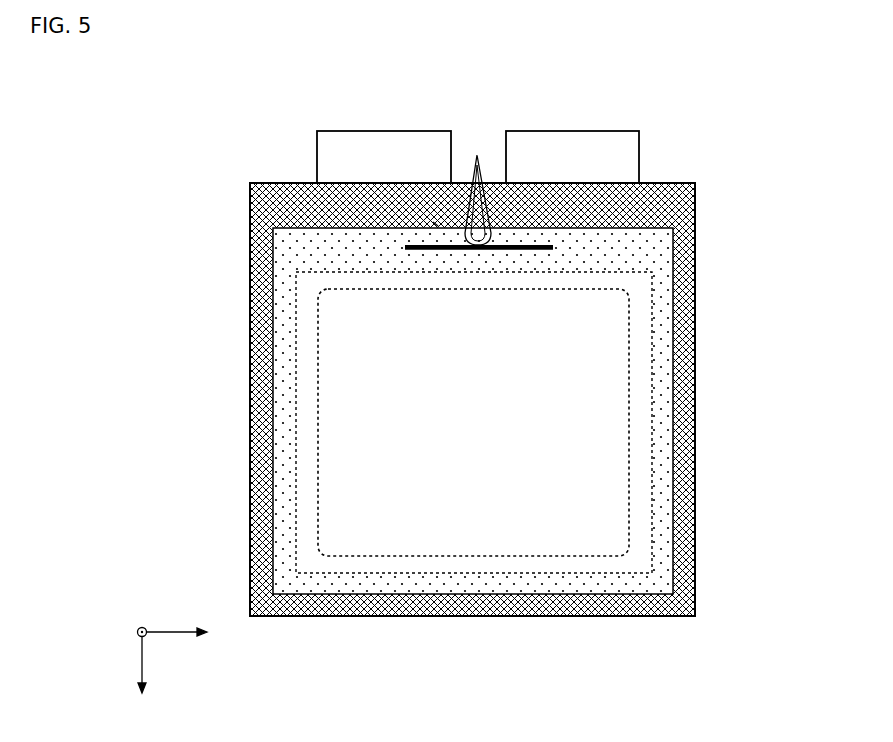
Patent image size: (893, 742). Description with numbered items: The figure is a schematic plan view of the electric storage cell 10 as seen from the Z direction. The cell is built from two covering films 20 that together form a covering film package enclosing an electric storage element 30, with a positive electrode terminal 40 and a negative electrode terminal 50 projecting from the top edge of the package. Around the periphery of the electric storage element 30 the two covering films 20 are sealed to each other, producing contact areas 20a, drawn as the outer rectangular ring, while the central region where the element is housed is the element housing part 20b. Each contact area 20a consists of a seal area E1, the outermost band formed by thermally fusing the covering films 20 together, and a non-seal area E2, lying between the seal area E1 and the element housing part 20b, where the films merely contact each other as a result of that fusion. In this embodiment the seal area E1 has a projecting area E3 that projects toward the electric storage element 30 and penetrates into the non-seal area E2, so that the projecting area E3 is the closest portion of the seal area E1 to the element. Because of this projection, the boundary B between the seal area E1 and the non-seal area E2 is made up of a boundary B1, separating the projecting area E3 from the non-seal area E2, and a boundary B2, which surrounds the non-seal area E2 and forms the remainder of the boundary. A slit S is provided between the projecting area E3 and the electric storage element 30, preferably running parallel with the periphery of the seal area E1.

The electric storage cell 10 is at (731, 161).
The covering films 20 is at (695, 540).
The contact areas 20a is at (140, 372).
The element housing part 20b is at (642, 308).
The electric storage element 30 is at (608, 404).
The positive electrode terminal 40 is at (570, 150).
The negative electrode terminal 50 is at (387, 148).
The slit S is at (526, 247).
The boundary B is at (495, 100).
The boundary B1 is at (477, 155).
The boundary B2 is at (433, 222).
The seal area E1 is at (257, 383).
The non-seal area E2 is at (280, 426).
The projecting area E3 is at (462, 233).